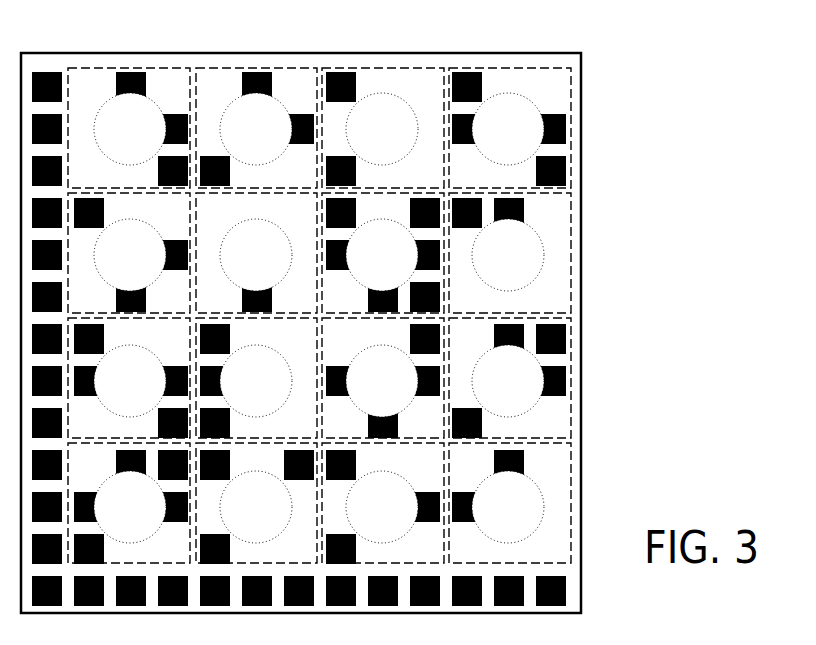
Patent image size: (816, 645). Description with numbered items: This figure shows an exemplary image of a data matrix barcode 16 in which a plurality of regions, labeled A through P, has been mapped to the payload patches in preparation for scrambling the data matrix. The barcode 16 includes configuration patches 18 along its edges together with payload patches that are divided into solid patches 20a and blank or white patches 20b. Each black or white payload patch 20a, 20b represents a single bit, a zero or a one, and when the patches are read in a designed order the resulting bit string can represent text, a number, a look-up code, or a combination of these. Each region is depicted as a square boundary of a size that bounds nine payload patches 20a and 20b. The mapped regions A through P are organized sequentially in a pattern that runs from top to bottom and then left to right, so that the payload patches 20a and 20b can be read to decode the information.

The data matrix barcode 16 is at (90, 64).
The configuration patches 18 is at (137, 607).
The solid patches 20a is at (354, 72).
The blank or white patches 20b is at (514, 75).